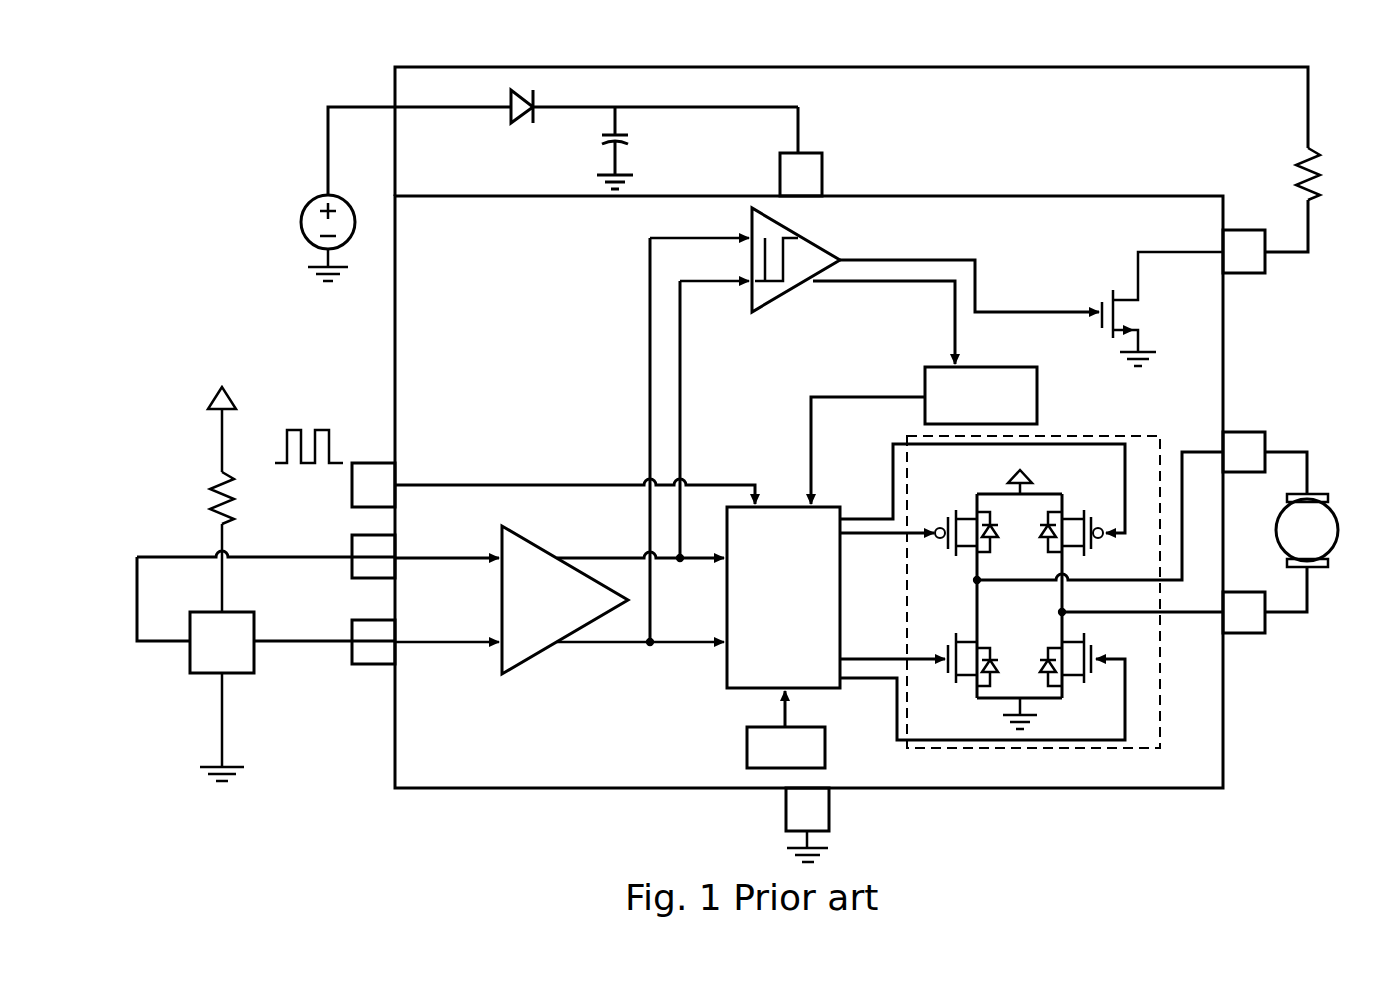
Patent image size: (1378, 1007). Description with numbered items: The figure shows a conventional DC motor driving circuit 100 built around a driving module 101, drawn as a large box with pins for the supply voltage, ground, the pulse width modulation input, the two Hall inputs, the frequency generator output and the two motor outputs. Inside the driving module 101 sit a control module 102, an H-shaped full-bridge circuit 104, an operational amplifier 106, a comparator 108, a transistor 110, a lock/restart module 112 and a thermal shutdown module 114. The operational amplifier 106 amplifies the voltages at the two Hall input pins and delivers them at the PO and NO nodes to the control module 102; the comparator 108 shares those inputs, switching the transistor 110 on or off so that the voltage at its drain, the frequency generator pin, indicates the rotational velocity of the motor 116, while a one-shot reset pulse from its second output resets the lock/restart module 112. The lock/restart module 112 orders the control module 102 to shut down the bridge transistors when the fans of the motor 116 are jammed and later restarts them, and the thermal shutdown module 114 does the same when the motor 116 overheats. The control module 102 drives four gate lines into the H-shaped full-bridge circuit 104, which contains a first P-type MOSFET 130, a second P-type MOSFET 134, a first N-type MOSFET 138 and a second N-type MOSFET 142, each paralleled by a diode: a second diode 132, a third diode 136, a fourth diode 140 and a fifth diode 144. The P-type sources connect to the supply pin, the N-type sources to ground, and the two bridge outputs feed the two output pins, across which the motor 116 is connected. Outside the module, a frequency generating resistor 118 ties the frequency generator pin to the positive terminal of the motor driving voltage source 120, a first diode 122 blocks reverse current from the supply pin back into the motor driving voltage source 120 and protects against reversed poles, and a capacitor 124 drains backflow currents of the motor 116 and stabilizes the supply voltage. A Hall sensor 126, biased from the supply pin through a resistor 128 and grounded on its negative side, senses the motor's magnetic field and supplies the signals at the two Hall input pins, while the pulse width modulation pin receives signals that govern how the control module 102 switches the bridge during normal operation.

The DC motor driving circuit 100 is at (262, 124).
The driving module 101 is at (1125, 196).
The control module 102 is at (762, 610).
The H-shaped full-bridge circuit 104 is at (1130, 436).
The operational amplifier 106 is at (516, 610).
The comparator 108 is at (772, 302).
The transistor 110 is at (1138, 316).
The lock/restart module 112 is at (960, 410).
The thermal shutdown module 114 is at (765, 760).
The motor 116 is at (1287, 542).
The frequency generating resistor 118 is at (1318, 166).
The motor driving voltage source 120 is at (302, 214).
The first diode 122 is at (522, 113).
The capacitor 124 is at (620, 137).
The Hall sensor 126 is at (201, 655).
The resistor 128 is at (213, 497).
The first P-type MOSFET 130 is at (948, 522).
The second diode 132 is at (997, 530).
The second P-type MOSFET 134 is at (1088, 515).
The third diode 136 is at (1043, 535).
The first N-type MOSFET 138 is at (948, 648).
The fourth diode 140 is at (997, 664).
The second N-type MOSFET 142 is at (1092, 643).
The fifth diode 144 is at (1043, 665).